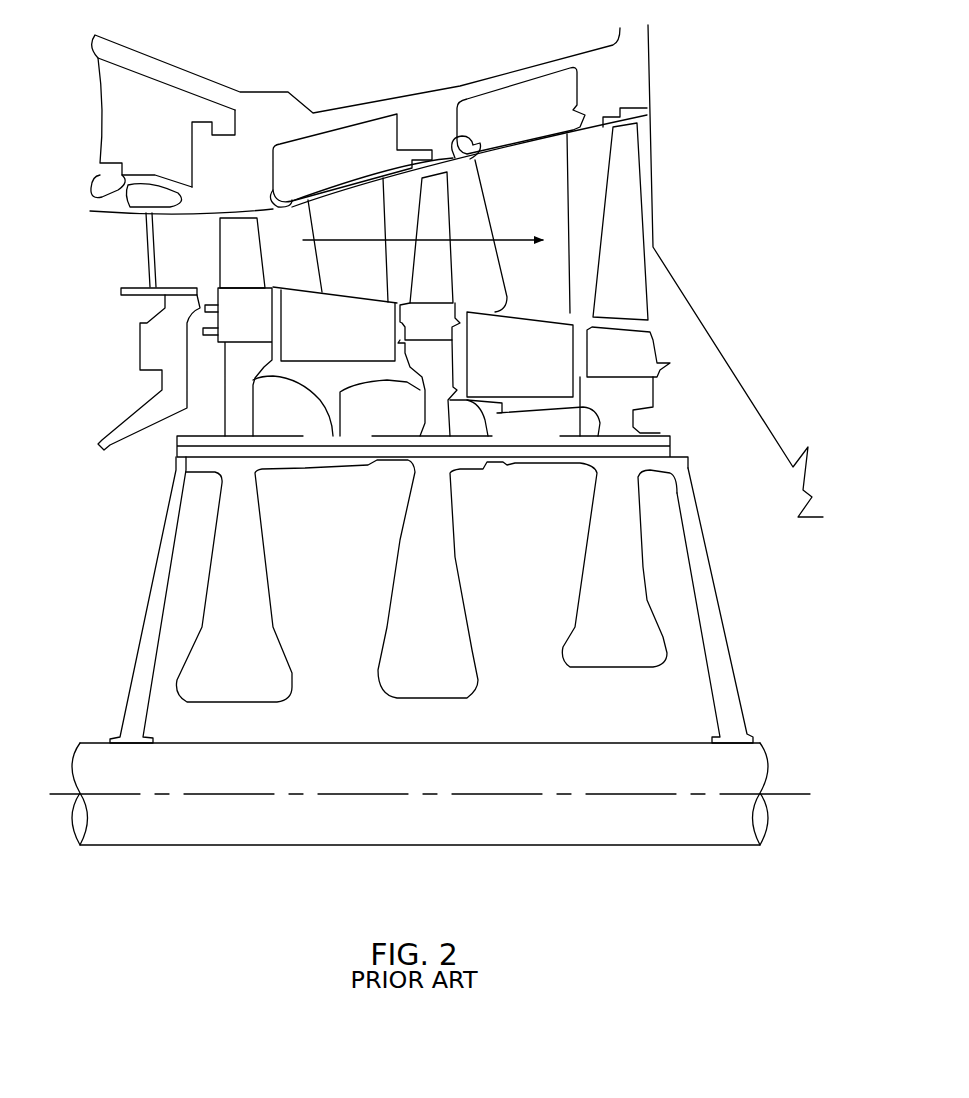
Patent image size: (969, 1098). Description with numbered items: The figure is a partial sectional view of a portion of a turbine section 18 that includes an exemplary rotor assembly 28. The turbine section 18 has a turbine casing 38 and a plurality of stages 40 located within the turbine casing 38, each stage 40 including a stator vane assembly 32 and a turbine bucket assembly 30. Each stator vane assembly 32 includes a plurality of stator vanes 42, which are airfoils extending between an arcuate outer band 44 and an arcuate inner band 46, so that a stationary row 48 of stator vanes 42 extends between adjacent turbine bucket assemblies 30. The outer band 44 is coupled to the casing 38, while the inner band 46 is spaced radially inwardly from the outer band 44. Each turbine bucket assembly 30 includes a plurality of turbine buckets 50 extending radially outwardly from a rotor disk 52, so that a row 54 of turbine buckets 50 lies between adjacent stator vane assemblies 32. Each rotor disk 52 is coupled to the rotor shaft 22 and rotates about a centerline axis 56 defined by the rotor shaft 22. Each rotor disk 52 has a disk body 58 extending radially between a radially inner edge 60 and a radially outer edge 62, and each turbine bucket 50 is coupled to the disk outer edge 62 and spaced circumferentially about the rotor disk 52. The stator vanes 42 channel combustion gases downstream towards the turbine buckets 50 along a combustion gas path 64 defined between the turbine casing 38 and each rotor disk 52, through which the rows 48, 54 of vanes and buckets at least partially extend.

The turbine section 18 is at (82, 137).
The rotor shaft 22 is at (592, 823).
The rotor assembly 28 is at (122, 386).
The turbine bucket assembly 30 is at (275, 279).
The stator vane assembly 32 is at (345, 167).
The turbine casing 38 is at (628, 62).
The stage 40 is at (415, 134).
The stator vane 42 is at (150, 243).
The arcuate outer band 44 is at (308, 192).
The arcuate inner band 46 is at (121, 290).
The stationary row of stator vanes 48 is at (370, 164).
The turbine bucket 50 is at (462, 301).
The rotor disk 52 is at (648, 391).
The row of turbine buckets 54 is at (660, 113).
The centerline axis 56 is at (788, 793).
The disk body 58 is at (417, 568).
The radially inner edge 60 is at (425, 700).
The radially outer edge 62 is at (447, 343).
The combustion gas path 64 is at (512, 237).